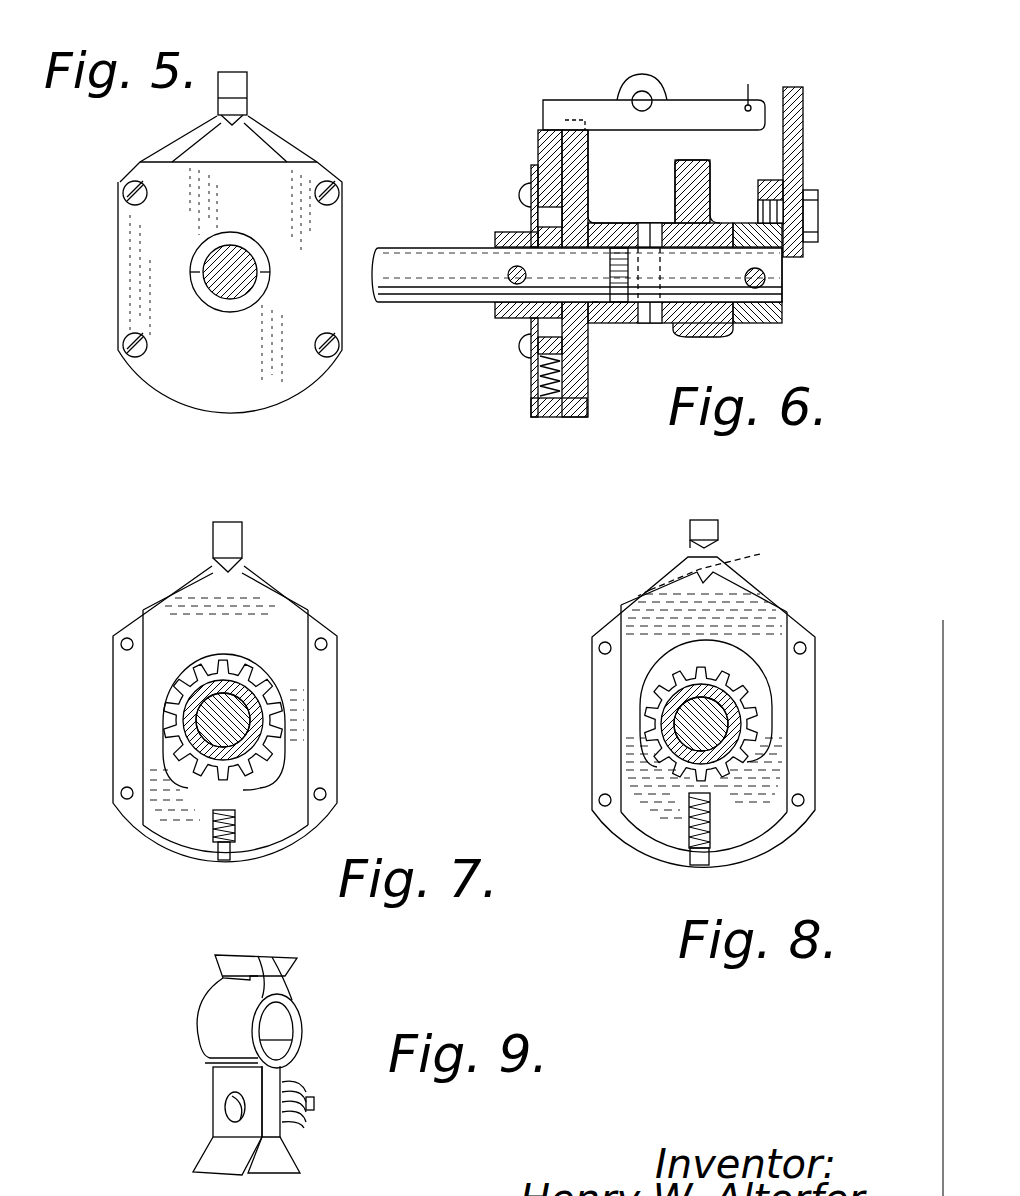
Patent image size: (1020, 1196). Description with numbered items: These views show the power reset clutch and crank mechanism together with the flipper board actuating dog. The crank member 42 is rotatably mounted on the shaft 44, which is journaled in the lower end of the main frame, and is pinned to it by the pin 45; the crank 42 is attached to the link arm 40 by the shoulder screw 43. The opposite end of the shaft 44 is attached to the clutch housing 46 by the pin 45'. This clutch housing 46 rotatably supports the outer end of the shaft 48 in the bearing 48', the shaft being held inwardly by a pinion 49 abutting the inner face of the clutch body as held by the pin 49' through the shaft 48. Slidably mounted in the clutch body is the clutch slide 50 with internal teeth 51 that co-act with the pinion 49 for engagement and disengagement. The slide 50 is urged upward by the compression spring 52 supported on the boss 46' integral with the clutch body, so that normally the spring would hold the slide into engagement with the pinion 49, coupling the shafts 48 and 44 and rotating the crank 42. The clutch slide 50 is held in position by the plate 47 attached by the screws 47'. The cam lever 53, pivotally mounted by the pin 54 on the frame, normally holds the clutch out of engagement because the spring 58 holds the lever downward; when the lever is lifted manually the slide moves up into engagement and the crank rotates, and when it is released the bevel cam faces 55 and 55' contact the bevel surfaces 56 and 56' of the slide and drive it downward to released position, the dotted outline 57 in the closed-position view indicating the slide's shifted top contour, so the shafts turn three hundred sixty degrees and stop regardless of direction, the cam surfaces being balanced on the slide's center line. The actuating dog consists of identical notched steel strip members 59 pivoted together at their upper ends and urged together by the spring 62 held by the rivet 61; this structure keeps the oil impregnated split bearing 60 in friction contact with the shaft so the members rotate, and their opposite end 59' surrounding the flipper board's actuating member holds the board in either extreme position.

In FIG. 6, the link arm 40 is at (803, 134).
In FIG. 6, the crank member 42 is at (762, 186).
In FIG. 6, the shoulder screw 43 is at (818, 208).
In FIG. 6, the shaft 44 is at (783, 290).
In FIG. 6, the pin 45 is at (810, 270).
In FIG. 6, the pin 45' is at (650, 254).
In FIG. 6, the clutch housing 46 is at (660, 273).
In FIG. 7, the clutch housing 46 is at (265, 714).
In FIG. 8, the clutch housing 46 is at (734, 712).
In FIG. 7, the boss 46' is at (218, 874).
In FIG. 8, the boss 46' is at (741, 866).
In FIG. 5, the plate 47 is at (230, 264).
In FIG. 6, the plate 47 is at (527, 283).
In FIG. 5, the screws 47' is at (238, 287).
In FIG. 6, the shaft 48 is at (577, 301).
In FIG. 7, the shaft 48 is at (288, 720).
In FIG. 8, the shaft 48 is at (765, 724).
In FIG. 6, the bearing 48' is at (615, 342).
In FIG. 6, the pinion 49 is at (515, 258).
In FIG. 7, the pinion 49 is at (228, 700).
In FIG. 8, the pinion 49 is at (693, 704).
In FIG. 6, the pin 49' is at (479, 256).
In FIG. 7, the clutch slide 50 is at (295, 648).
In FIG. 8, the clutch slide 50 is at (765, 620).
In FIG. 7, the internal teeth 51 is at (250, 792).
In FIG. 7, the compression spring 52 is at (236, 828).
In FIG. 8, the compression spring 52 is at (711, 815).
In FIG. 6, the cam lever 53 is at (706, 100).
In FIG. 6, the pin 54 is at (648, 94).
In FIG. 5, the bevel cam face 55 is at (261, 90).
In FIG. 6, the bevel cam face 55 is at (532, 108).
In FIG. 7, the bevel cam face 55 is at (251, 547).
In FIG. 8, the bevel cam face 55 is at (738, 530).
In FIG. 8, the bevel cam face 55' is at (667, 530).
In FIG. 8, the bevel surface 56 is at (723, 589).
In FIG. 8, the bevel surface 56' is at (634, 574).
In FIG. 8, the notch 57 is at (760, 554).
In FIG. 6, the spring 58 is at (752, 86).
In FIG. 9, the steel strip members 59 is at (257, 945).
In FIG. 9, the opposite end 59' is at (253, 1155).
In FIG. 9, the split bearing 60 is at (292, 1027).
In FIG. 9, the rivet 61 is at (228, 1116).
In FIG. 9, the spring 62 is at (300, 1082).